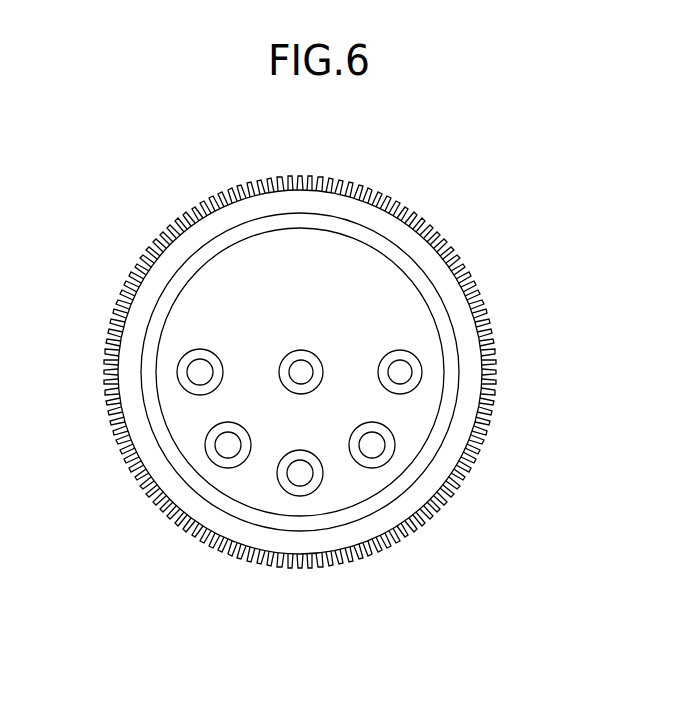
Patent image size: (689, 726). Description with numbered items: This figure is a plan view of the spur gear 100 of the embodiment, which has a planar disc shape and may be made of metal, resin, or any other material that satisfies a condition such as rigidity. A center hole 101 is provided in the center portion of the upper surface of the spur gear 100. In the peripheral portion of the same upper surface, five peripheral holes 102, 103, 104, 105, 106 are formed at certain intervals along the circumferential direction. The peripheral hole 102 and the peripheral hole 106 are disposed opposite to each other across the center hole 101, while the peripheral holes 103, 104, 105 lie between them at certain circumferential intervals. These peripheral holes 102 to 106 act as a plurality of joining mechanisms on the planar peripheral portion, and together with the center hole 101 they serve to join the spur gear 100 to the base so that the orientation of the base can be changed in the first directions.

The spur gear 100 is at (299, 245).
The center hole 101 is at (302, 372).
The peripheral hole 102 is at (199, 374).
The peripheral hole 103 is at (228, 447).
The peripheral hole 104 is at (300, 476).
The peripheral hole 105 is at (373, 447).
The peripheral hole 106 is at (401, 371).